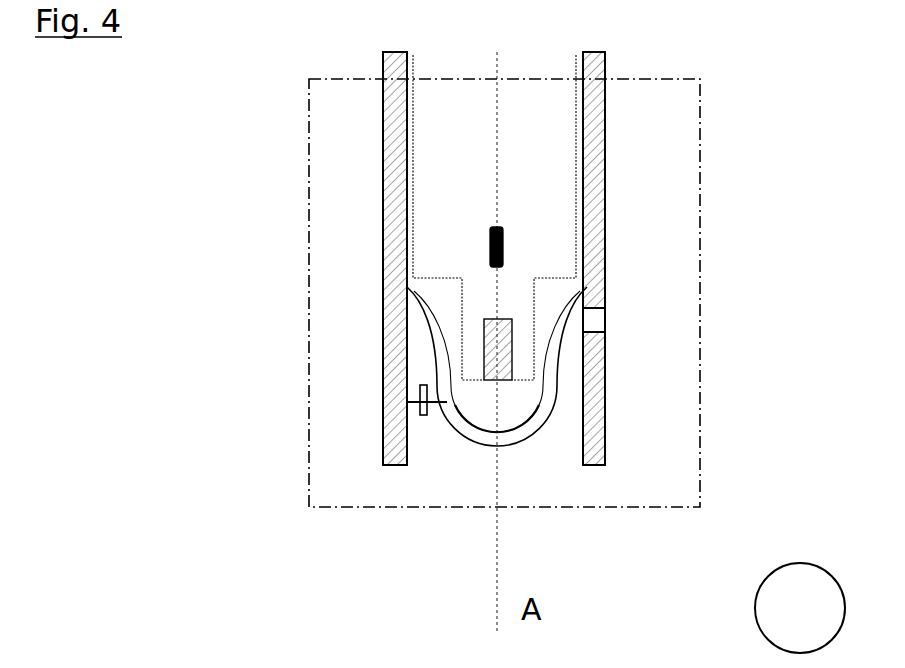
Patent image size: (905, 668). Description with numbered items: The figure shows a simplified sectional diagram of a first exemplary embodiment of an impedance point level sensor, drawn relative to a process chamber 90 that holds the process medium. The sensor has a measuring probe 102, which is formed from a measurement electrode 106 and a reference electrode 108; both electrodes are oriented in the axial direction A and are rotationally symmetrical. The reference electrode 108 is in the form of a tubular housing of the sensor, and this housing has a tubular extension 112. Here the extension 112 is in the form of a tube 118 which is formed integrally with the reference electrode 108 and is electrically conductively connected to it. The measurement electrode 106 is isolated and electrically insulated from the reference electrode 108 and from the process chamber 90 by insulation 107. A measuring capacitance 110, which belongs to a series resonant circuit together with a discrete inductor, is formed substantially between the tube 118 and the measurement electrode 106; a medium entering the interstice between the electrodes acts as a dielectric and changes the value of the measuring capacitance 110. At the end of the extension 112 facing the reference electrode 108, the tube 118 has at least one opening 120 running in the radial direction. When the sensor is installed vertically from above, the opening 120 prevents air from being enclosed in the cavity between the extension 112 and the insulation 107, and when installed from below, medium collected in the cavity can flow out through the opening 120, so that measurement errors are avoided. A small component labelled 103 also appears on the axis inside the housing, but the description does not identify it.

The process chamber 90 is at (800, 608).
The measuring probe 102 is at (424, 490).
The sensor 103 is at (504, 247).
The measurement electrode 106 is at (530, 426).
The insulation 107 is at (428, 325).
The reference electrode 108 is at (605, 222).
The measuring capacitance 110 is at (428, 416).
The tubular extension 112 is at (690, 323).
The tube 118 is at (598, 401).
The opening 120 is at (606, 322).